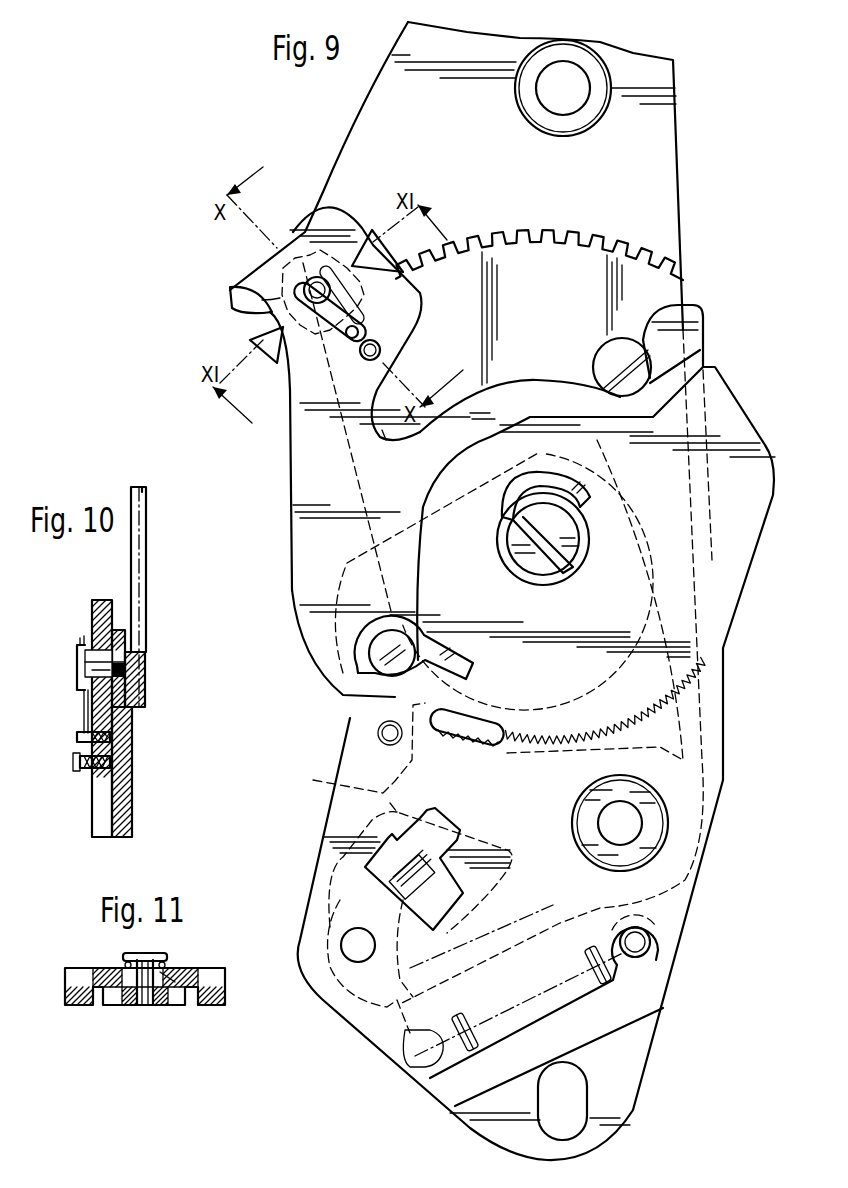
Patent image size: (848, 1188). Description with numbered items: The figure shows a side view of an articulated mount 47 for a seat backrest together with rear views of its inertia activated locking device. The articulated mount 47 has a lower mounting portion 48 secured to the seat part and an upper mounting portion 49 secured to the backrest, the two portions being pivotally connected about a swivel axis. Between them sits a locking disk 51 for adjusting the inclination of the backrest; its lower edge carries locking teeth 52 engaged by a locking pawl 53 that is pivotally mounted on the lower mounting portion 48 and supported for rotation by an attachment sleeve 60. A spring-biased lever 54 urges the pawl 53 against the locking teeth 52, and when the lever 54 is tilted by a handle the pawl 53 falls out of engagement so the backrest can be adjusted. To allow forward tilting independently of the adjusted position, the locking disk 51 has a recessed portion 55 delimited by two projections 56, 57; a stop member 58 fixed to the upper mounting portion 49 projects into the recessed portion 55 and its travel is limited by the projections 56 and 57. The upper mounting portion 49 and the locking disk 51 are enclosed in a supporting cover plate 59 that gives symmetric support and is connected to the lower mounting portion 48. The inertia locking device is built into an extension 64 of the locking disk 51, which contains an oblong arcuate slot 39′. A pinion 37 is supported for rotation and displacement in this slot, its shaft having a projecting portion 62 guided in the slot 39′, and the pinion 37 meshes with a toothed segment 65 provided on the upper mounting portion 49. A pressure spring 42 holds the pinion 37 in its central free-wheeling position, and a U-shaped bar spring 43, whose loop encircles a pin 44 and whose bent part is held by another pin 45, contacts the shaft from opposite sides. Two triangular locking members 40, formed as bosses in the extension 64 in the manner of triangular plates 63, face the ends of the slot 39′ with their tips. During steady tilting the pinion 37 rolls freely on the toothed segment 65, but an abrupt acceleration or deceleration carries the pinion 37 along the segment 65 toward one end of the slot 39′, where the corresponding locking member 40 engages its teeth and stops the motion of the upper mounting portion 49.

In FIG. 9, the pinion 37 is at (302, 255).
In FIG. 10, the pinion 37 is at (118, 648).
In FIG. 11, the pinion 37 is at (127, 1005).
In FIG. 9, the arcuate slot 39′ is at (280, 298).
In FIG. 11, the arcuate slot 39′ is at (167, 980).
In FIG. 9, the locking member 40 is at (413, 293).
In FIG. 11, the locking member 40 is at (95, 1005).
In FIG. 10, the pressure spring 42 is at (76, 706).
In FIG. 9, the bar spring 43 is at (395, 327).
In FIG. 11, the bar spring 43 is at (128, 964).
In FIG. 9, the pin 44 is at (381, 350).
In FIG. 10, the pin 44 is at (80, 762).
In FIG. 9, the pin 45 is at (350, 339).
In FIG. 10, the pin 45 is at (78, 737).
In FIG. 9, the articulated mount 47 is at (318, 658).
In FIG. 9, the lower mounting portion 48 is at (670, 923).
In FIG. 9, the upper mounting portion 49 is at (660, 217).
In FIG. 10, the upper mounting portion 49 is at (118, 777).
In FIG. 9, the locking disk 51 is at (315, 540).
In FIG. 9, the locking teeth 52 is at (477, 717).
In FIG. 9, the locking pawl 53 is at (330, 780).
In FIG. 9, the spring-biased lever 54 is at (347, 880).
In FIG. 9, the recessed portion 55 is at (532, 378).
In FIG. 9, the projection 56 is at (380, 433).
In FIG. 9, the projection 57 is at (702, 357).
In FIG. 9, the stop member 58 is at (610, 360).
In FIG. 9, the supporting cover plate 59 is at (352, 708).
In FIG. 9, the attachment sleeve 60 is at (657, 838).
In FIG. 10, the projecting portion 62 is at (100, 657).
In FIG. 9, the triangular plate 63 is at (370, 232).
In FIG. 11, the triangular plate 63 is at (73, 1000).
In FIG. 9, the extension 64 is at (284, 243).
In FIG. 9, the toothed segment 65 is at (519, 232).
In FIG. 10, the toothed segment 65 is at (132, 723).